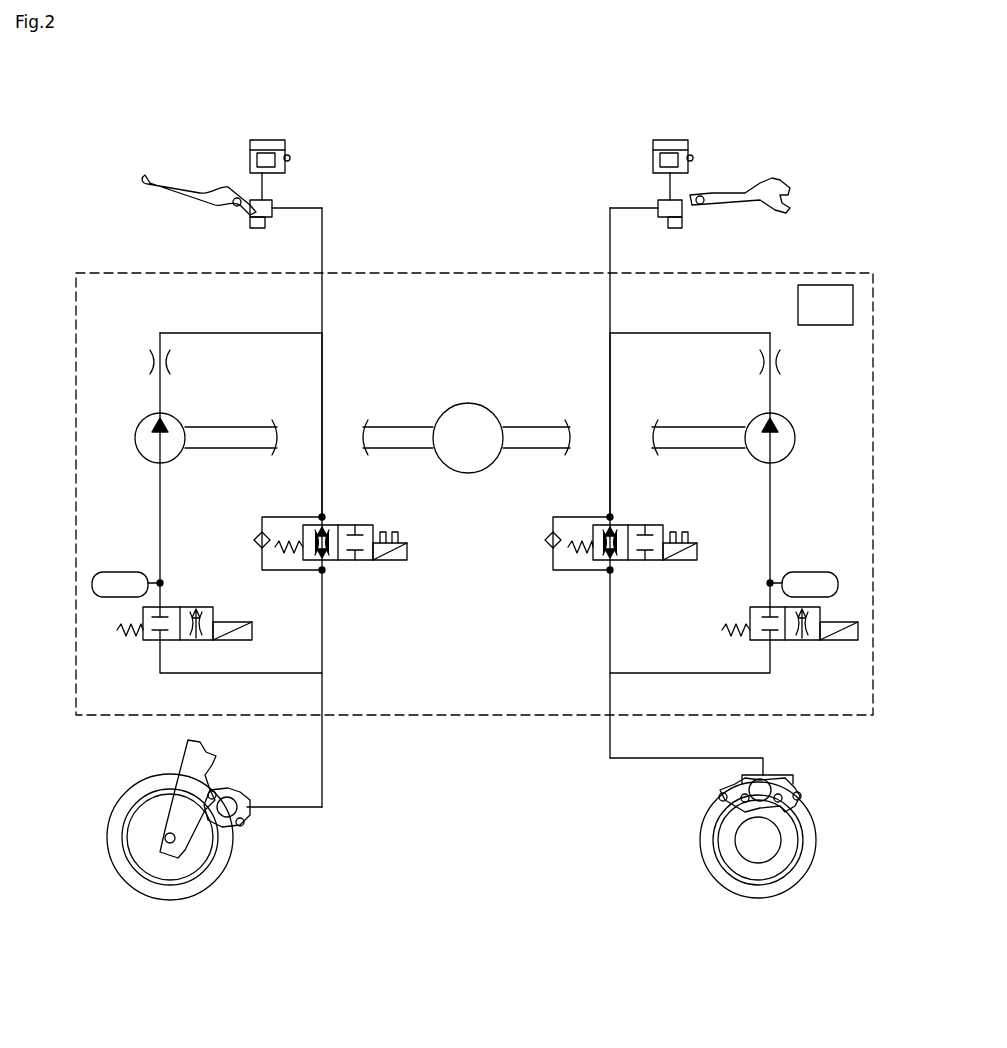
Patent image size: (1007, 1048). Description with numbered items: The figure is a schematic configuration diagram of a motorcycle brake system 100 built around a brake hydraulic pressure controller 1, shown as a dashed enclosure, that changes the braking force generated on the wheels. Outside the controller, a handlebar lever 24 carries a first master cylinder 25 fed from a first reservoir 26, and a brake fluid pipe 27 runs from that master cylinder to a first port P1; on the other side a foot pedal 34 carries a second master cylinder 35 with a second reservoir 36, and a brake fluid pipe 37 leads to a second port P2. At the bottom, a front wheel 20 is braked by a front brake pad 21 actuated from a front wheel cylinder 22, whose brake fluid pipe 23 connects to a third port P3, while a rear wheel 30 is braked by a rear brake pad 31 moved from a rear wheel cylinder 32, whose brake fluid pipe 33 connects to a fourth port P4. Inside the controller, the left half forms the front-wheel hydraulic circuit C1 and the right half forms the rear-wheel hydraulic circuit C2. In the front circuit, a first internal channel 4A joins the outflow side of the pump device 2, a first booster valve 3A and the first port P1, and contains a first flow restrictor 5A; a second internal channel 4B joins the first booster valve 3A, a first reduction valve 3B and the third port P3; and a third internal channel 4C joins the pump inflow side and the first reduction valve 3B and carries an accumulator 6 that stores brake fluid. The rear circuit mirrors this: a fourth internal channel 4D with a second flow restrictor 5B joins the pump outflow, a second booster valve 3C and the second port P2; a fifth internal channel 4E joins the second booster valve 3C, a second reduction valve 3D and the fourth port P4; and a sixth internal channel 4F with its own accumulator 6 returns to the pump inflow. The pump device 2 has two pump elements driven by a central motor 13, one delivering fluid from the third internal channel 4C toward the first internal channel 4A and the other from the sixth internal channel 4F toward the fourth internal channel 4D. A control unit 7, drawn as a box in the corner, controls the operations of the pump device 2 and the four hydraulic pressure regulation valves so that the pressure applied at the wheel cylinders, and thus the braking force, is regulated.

The brake hydraulic pressure controller 1 is at (108, 270).
The brake system 100 is at (575, 135).
The pump device 2 is at (177, 452).
The first booster valve 3A is at (356, 565).
The first reduction valve 3B is at (206, 607).
The second booster valve 3C is at (660, 565).
The second reduction valve 3D is at (805, 645).
The first internal channel 4A is at (325, 380).
The second internal channel 4B is at (276, 673).
The third internal channel 4C is at (160, 510).
The fourth internal channel 4D is at (607, 380).
The fifth internal channel 4E is at (692, 673).
The sixth internal channel 4F is at (772, 520).
The first flow restrictor 5A is at (172, 362).
The second flow restrictor 5B is at (758, 362).
The accumulator 6 is at (120, 572).
The control unit 7 is at (827, 325).
The motor 13 is at (455, 405).
The front wheel 20 is at (131, 780).
The front brake pad 21 is at (232, 790).
The front wheel cylinder 22 is at (240, 808).
The brake fluid pipe 23 is at (286, 810).
The handlebar lever 24 is at (172, 183).
The first master cylinder 25 is at (268, 222).
The first reservoir 26 is at (276, 140).
The brake fluid pipe 27 is at (300, 208).
The rear wheel 30 is at (815, 853).
The rear brake pad 31 is at (720, 805).
The rear wheel cylinder 32 is at (775, 788).
The brake fluid pipe 33 is at (690, 758).
The foot pedal 34 is at (778, 190).
The second master cylinder 35 is at (667, 222).
The second reservoir 36 is at (676, 140).
The brake fluid pipe 37 is at (624, 208).
The first port P1 is at (325, 270).
The second port P2 is at (607, 270).
The third port P3 is at (326, 720).
The fourth port P4 is at (607, 720).
The front-wheel hydraulic circuit C1 is at (324, 335).
The rear-wheel hydraulic circuit C2 is at (608, 335).